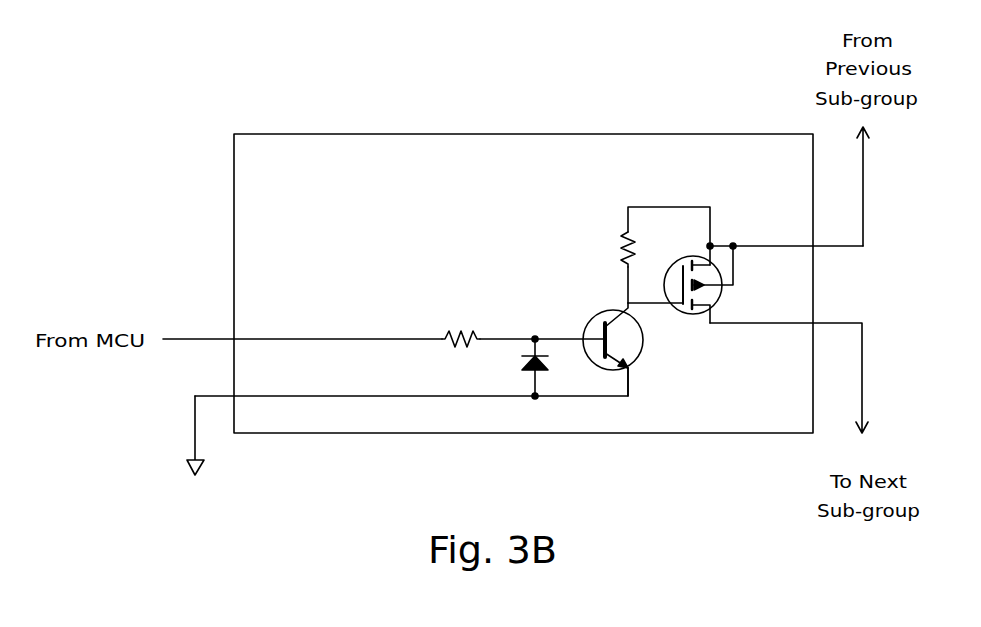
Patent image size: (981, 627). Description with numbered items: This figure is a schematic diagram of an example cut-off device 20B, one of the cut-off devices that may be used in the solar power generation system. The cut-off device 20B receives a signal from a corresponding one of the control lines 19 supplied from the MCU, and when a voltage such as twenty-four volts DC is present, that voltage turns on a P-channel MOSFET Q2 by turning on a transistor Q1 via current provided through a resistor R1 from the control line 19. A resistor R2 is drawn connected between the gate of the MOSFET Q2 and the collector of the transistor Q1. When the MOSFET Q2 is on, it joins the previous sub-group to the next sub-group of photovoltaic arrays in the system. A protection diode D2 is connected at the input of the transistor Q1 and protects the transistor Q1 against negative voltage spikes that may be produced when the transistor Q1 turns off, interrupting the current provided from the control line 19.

The control line 19 is at (192, 339).
The cut-off device 20B is at (452, 165).
The resistor R1 is at (461, 328).
The resistor R2 is at (648, 255).
The protection diode D2 is at (518, 367).
The transistor Q1 is at (630, 349).
The P-channel MOSFET Q2 is at (697, 272).